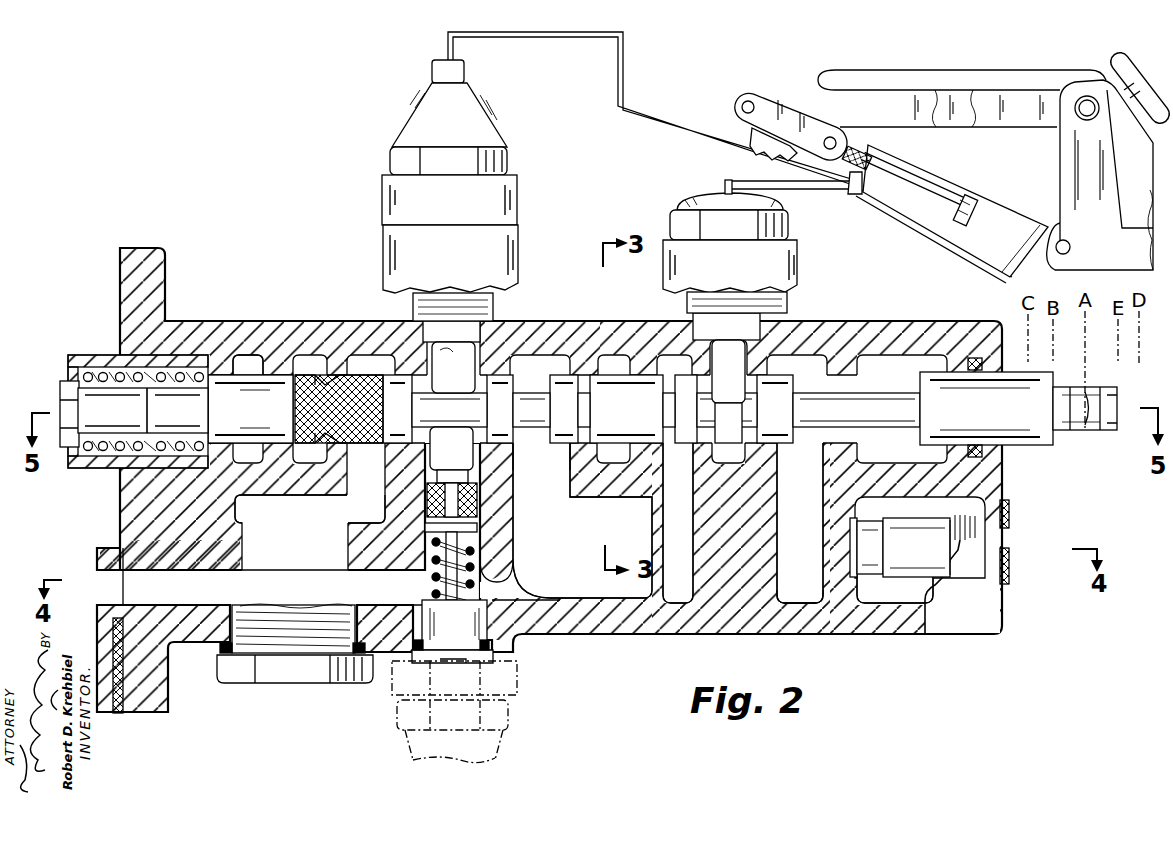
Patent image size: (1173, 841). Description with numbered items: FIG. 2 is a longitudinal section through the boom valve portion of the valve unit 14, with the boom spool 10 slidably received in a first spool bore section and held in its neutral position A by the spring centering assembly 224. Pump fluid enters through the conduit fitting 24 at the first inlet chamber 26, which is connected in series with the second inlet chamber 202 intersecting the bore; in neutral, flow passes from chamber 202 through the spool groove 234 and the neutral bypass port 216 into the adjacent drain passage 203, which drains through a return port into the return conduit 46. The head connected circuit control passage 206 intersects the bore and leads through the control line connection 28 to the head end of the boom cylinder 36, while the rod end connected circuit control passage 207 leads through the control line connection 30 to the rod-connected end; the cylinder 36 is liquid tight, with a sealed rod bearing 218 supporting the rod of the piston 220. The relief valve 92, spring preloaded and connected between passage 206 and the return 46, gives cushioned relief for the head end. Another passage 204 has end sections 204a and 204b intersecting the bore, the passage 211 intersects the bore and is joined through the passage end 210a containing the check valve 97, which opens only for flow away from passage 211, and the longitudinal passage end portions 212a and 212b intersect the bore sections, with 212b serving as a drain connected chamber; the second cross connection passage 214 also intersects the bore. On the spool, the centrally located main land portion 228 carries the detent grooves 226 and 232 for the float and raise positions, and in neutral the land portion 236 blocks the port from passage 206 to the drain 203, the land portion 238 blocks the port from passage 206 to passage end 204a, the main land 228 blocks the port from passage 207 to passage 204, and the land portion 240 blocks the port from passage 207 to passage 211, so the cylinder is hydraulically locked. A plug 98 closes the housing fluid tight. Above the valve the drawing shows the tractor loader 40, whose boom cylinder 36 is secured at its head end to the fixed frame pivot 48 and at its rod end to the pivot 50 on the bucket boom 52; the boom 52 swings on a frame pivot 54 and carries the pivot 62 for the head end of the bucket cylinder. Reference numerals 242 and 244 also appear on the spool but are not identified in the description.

The spool 10 is at (1020, 447).
The valve unit 14 is at (137, 248).
The conduit fitting 24 is at (400, 715).
The first inlet chamber 26 is at (520, 677).
The control line connection 28 is at (538, 36).
The control line connection 30 is at (731, 183).
The boom cylinder 36 is at (1043, 217).
The tractor loader 40 is at (1092, 78).
The return conduit 46 is at (145, 604).
The fixed frame pivot 48 is at (1070, 247).
The pivot 50 is at (815, 135).
The bucket boom 52 is at (993, 93).
The pivot 54 is at (1086, 96).
The pivot 62 is at (755, 88).
The relief valve 92 is at (480, 518).
The check valve 97 is at (925, 542).
The plug 98 is at (287, 685).
The second inlet chamber 202 is at (303, 357).
The drain passage 203 is at (374, 486).
The passage 204 is at (542, 597).
The passage end 204a is at (560, 357).
The passage end 204b is at (670, 362).
The head connected circuit control passage 206 is at (451, 402).
The rod end connected circuit control passage 207 is at (726, 378).
The passage end section 210a is at (880, 602).
The passage 211 is at (803, 600).
The passage end portion 212a is at (245, 356).
The passage end portion 212b is at (902, 360).
The second cross connection passage 214 is at (617, 464).
The neutral bypass port 216 is at (357, 360).
The sealed rod bearing 218 is at (868, 140).
The piston 220 is at (967, 193).
The spring centering assembly 224 is at (101, 354).
The detent groove 226 is at (668, 462).
The main land portion 228 is at (574, 478).
The detent groove 232 is at (574, 452).
The spool groove 234 is at (322, 387).
The spool land portion 236 is at (392, 449).
The spool land portion 238 is at (527, 372).
The spool land portion 240 is at (815, 446).
The groove 242 is at (725, 448).
The spool land 244 is at (274, 380).